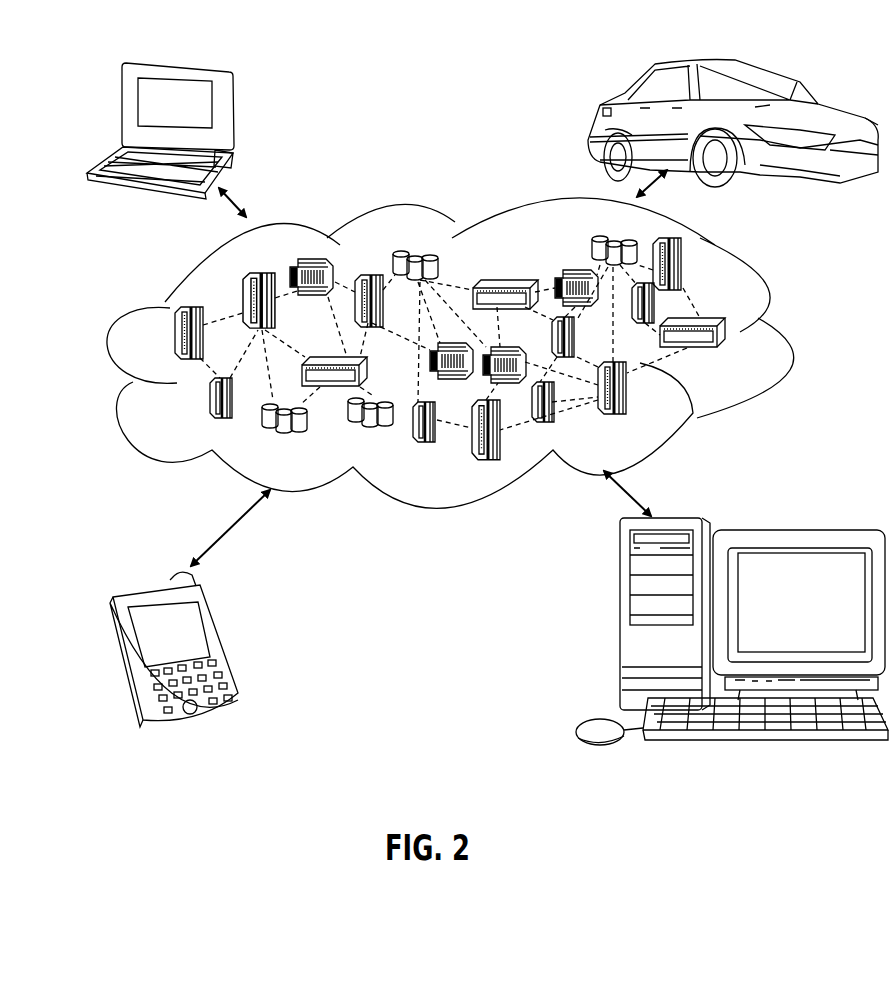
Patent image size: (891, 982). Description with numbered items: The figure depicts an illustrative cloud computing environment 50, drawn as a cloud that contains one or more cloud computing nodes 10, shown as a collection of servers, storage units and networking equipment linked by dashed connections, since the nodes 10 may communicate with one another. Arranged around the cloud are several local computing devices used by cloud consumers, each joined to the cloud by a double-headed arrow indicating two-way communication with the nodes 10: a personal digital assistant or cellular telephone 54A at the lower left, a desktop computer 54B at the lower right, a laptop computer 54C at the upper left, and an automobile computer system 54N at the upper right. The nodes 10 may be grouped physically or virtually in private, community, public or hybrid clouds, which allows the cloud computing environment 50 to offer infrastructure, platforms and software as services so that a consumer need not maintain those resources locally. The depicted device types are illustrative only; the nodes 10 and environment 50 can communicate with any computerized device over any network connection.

The cloud computing nodes 10 is at (756, 356).
The cloud computing environment 50 is at (770, 297).
The personal digital assistant or cellular telephone 54A is at (222, 643).
The desktop computer 54B is at (620, 622).
The laptop computer 54C is at (230, 108).
The automobile computer system 54N is at (598, 116).